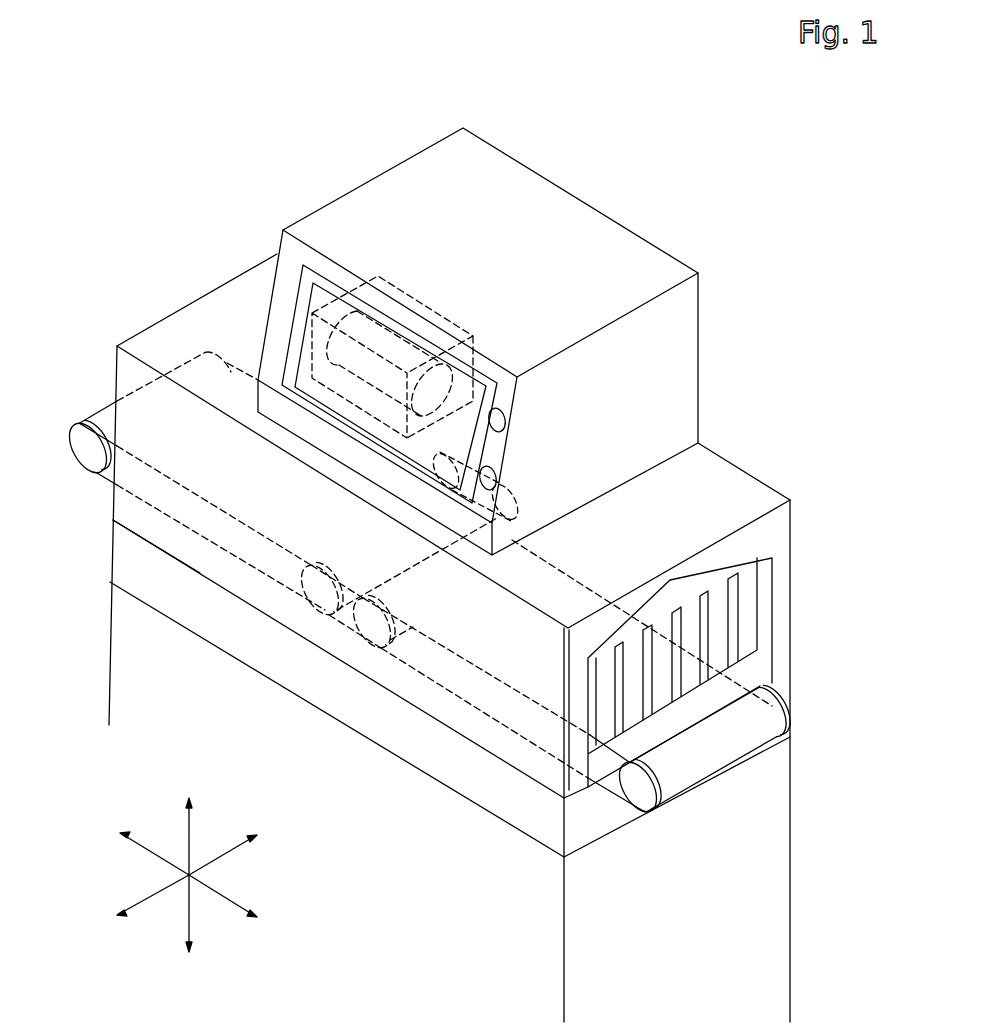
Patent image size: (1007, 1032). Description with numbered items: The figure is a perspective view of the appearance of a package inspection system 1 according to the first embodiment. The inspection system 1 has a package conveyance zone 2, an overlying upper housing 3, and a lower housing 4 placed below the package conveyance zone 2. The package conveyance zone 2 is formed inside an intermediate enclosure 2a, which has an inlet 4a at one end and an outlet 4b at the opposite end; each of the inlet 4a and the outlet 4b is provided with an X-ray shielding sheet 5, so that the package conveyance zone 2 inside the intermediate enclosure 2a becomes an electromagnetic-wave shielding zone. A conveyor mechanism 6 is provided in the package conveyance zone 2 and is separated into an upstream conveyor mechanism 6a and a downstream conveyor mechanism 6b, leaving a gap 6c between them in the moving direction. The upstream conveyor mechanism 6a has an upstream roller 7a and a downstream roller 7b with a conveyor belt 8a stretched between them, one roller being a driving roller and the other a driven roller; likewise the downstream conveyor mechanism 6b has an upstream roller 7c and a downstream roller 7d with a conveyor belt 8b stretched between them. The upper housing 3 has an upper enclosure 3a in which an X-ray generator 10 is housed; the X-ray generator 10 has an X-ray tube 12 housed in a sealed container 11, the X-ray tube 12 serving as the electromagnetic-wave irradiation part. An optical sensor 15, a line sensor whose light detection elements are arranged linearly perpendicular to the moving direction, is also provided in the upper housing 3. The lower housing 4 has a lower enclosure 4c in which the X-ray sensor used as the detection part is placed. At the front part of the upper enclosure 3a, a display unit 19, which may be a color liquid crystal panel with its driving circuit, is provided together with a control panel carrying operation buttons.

The inspection system 1 is at (400, 128).
The package conveyance zone 2 is at (796, 596).
The intermediate enclosure 2a is at (762, 492).
The upper housing 3 is at (688, 353).
The upper enclosure 3a is at (622, 250).
The lower housing 4 is at (548, 852).
The inlet 4a is at (790, 690).
The outlet 4b is at (112, 508).
The lower enclosure 4c is at (483, 805).
The X-ray shielding sheet 5 is at (677, 600).
The conveyor mechanism 6 is at (386, 682).
The upstream conveyor mechanism 6a is at (482, 722).
The downstream conveyor mechanism 6b is at (220, 560).
The gap 6c is at (345, 630).
The upstream roller 7a is at (640, 800).
The downstream roller 7b is at (363, 650).
The upstream roller 7c is at (305, 608).
The downstream roller 7d is at (82, 447).
The conveyor belt 8a is at (497, 667).
The conveyor belt 8b is at (205, 492).
The X-ray generator 10 is at (450, 308).
The sealed container 11 is at (396, 288).
The X-ray tube 12 is at (462, 372).
The optical sensor 15 is at (512, 500).
The display unit 19 is at (318, 298).